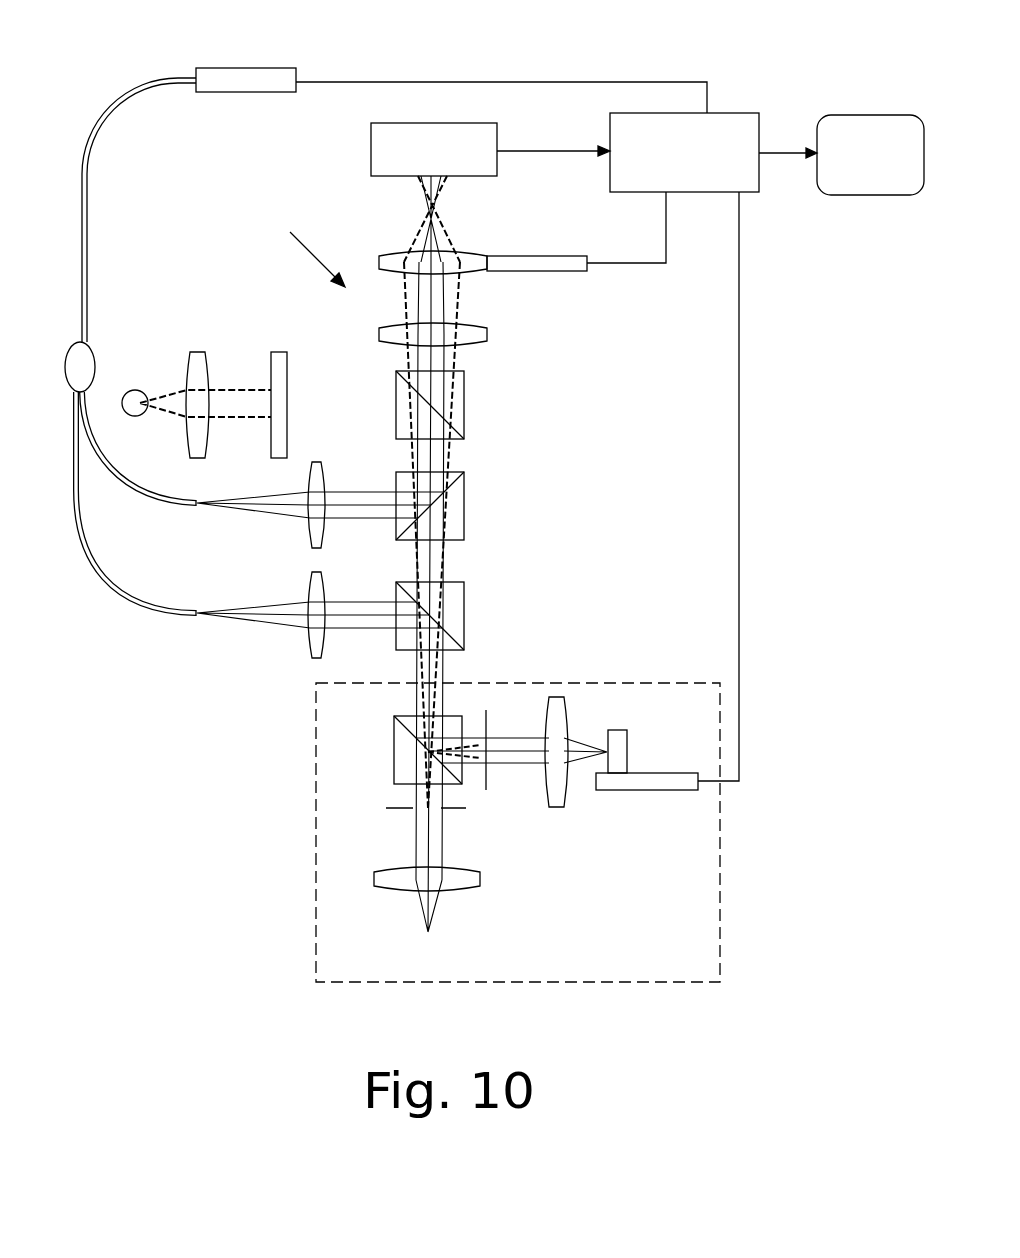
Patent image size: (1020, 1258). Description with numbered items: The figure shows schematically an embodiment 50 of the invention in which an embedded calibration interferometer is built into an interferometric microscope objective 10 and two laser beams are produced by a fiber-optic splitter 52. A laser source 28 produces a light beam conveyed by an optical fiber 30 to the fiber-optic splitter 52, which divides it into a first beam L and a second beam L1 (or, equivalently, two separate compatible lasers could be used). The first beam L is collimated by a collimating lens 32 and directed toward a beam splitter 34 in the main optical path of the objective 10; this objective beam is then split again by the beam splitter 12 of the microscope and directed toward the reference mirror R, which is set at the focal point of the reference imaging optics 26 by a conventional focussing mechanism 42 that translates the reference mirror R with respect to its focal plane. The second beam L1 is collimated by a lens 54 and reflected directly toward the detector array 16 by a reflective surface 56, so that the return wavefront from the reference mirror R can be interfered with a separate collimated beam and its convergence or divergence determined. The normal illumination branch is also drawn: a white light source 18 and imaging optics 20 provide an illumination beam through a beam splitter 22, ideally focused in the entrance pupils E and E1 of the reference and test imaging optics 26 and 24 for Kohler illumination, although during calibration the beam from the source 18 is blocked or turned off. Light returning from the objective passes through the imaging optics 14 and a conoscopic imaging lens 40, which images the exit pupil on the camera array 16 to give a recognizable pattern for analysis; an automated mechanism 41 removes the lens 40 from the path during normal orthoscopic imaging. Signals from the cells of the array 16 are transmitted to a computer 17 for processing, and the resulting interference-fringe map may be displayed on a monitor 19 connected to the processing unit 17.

The interferometric microscope objective 10 is at (722, 917).
The beam splitter 12 is at (394, 755).
The imaging optics 14 is at (473, 338).
The imaging array 16 is at (377, 155).
The computer 17 is at (727, 115).
The white light source 18 is at (135, 398).
The monitor 19 is at (862, 125).
The imaging optics 20 is at (200, 363).
The beam splitter 22 is at (466, 411).
The test imaging optics 24 is at (470, 880).
The reference imaging optics 26 is at (560, 716).
The laser source 28 is at (250, 79).
The optical fiber 30 is at (83, 168).
The collimating lens 32 is at (324, 590).
The beam splitter 34 is at (462, 612).
The conoscopic imaging lens 40 is at (469, 258).
The automated mechanism 41 is at (538, 258).
The focussing mechanism 42 is at (658, 783).
The embodiment 50 is at (298, 252).
The fiber-optic splitter 52 is at (79, 360).
The lens 54 is at (318, 476).
The reflective surface 56 is at (466, 510).
The light beam L is at (265, 623).
The second laser beam L1 is at (272, 508).
The entrance pupil E is at (488, 723).
The entrance pupil E1 is at (452, 812).
The reference mirror R is at (608, 735).